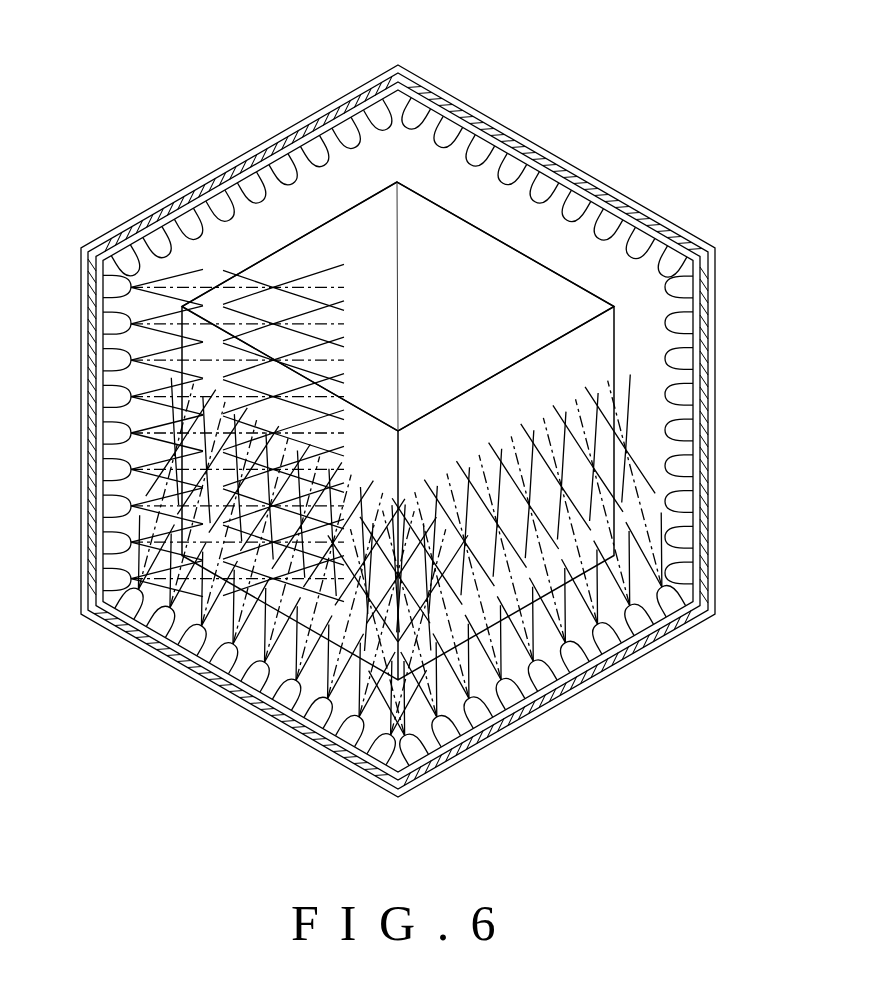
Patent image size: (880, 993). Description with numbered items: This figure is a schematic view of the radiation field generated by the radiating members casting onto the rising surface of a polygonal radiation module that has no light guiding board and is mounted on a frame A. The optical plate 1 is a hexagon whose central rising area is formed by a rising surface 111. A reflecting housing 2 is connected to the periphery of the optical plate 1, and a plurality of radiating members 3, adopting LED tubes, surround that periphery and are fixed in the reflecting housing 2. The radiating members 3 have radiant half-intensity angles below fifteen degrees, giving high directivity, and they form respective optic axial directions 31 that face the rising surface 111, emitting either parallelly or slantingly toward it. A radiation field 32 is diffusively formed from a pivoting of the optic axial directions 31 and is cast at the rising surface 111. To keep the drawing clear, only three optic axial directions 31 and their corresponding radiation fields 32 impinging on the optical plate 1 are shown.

The optical plate 1 is at (398, 340).
The rising surface 111 is at (435, 235).
The reflecting housing 2 is at (496, 193).
The radiating members 3 is at (443, 132).
The optic axial directions 31 is at (190, 303).
The radiation field 32 is at (282, 297).
The frame A is at (598, 183).